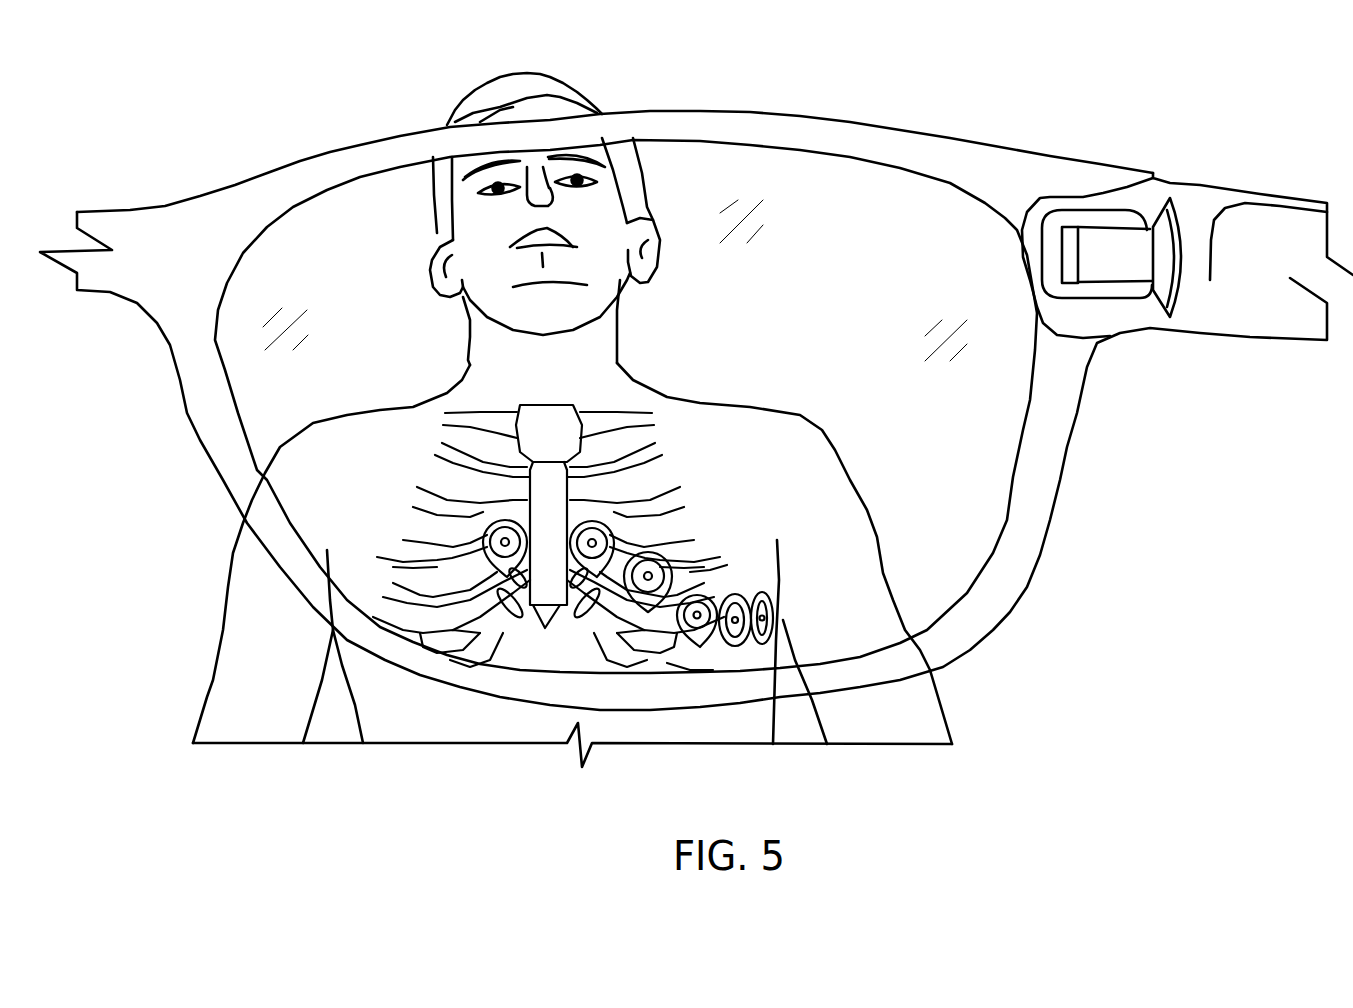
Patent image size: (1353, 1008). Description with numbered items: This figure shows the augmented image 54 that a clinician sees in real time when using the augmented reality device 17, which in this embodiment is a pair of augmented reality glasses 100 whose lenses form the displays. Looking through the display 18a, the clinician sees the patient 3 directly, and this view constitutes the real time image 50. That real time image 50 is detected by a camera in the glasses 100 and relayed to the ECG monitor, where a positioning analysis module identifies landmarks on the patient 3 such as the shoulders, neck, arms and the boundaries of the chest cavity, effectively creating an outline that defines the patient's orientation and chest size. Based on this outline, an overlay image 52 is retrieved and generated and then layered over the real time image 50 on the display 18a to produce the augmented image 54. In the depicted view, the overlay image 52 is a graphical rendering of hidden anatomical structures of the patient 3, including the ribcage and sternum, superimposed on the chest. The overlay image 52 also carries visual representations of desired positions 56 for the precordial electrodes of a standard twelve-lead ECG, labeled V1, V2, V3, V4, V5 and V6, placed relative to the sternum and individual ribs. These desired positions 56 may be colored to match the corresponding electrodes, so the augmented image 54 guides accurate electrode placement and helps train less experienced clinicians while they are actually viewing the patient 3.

The patient 3 is at (798, 462).
The augmented reality device 17 is at (1044, 147).
The display 18a is at (660, 170).
The real time image 50 is at (793, 118).
The overlay image 52 is at (650, 435).
The augmented image 54 is at (381, 358).
The desired positions 56 is at (708, 493).
The augmented reality glasses 100 is at (696, 380).
The V1 chest electrode V1 is at (505, 536).
The V2 chest electrode V2 is at (592, 536).
The V3 chest electrode V3 is at (648, 566).
The V4 chest electrode V4 is at (697, 609).
The V5 chest electrode V5 is at (738, 608).
The V6 chest electrode V6 is at (786, 618).